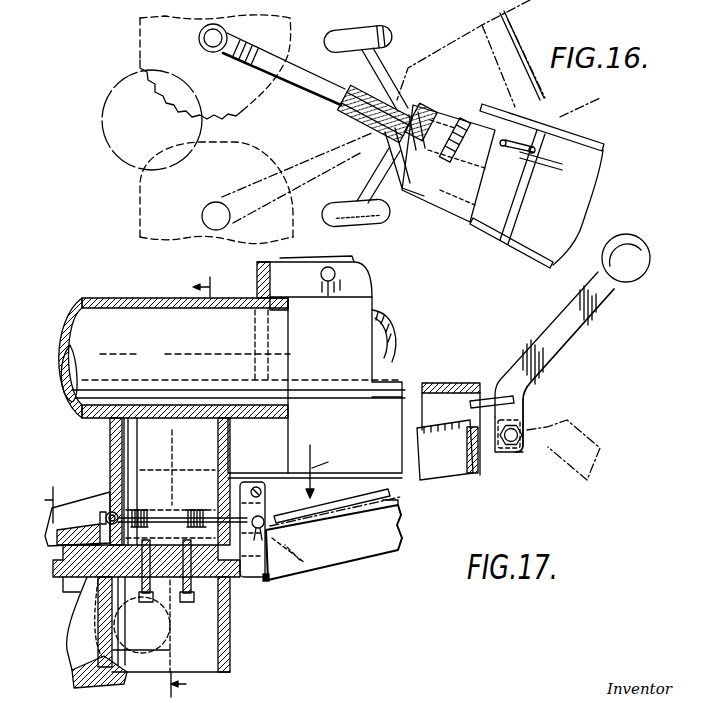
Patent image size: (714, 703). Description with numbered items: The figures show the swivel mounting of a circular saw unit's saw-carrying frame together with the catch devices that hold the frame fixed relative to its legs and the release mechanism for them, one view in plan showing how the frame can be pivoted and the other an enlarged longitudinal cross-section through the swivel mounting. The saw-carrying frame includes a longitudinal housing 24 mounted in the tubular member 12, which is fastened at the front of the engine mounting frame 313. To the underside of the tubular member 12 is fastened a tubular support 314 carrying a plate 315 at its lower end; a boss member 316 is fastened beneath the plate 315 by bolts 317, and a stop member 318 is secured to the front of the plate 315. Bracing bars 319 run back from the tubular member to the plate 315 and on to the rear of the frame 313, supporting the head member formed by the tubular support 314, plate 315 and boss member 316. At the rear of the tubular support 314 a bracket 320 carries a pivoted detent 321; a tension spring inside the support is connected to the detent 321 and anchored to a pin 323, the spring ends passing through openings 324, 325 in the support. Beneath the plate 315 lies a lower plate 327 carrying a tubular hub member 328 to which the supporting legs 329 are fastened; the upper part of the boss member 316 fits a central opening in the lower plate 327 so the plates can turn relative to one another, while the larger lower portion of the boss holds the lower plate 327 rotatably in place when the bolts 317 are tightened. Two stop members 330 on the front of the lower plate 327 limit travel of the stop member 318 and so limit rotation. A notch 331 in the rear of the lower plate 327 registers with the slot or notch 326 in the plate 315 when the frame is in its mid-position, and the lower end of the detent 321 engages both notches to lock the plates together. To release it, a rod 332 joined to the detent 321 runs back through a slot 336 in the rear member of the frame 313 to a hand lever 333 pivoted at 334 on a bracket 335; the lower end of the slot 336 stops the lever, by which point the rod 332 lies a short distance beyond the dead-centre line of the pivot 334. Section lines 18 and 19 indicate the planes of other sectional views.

In FIG. 16, the tubular member 12 is at (358, 97).
In FIG. 17, the tubular member 12 is at (102, 299).
In FIG. 17, the section line 18- 18 is at (202, 486).
In FIG. 17, the section line 19- 19 is at (190, 484).
In FIG. 16, the longitudinal housing 24 is at (288, 74).
In FIG. 17, the longitudinal housing 24 is at (188, 352).
In FIG. 16, the engine mounting frame 313 is at (447, 106).
In FIG. 17, the engine mounting frame 313 is at (432, 382).
In FIG. 17, the tubular support 314 is at (110, 432).
In FIG. 17, the plate 315 is at (86, 574).
In FIG. 17, the boss member 316 is at (206, 600).
In FIG. 17, the bolts 317 is at (152, 600).
In FIG. 17, the stop member 318 is at (110, 523).
In FIG. 16, the bracing bars 319 is at (457, 127).
In FIG. 17, the bracing bars 319 is at (450, 482).
In FIG. 17, the bracket 320 is at (233, 476).
In FIG. 17, the detent 321 is at (258, 515).
In FIG. 17, the pin 323 is at (107, 511).
In FIG. 17, the opening 324 is at (112, 509).
In FIG. 17, the opening 325 is at (214, 512).
In FIG. 17, the slot or notch 326 is at (298, 566).
In FIG. 17, the lower plate 327 is at (97, 590).
In FIG. 17, the tubular hub member 328 is at (113, 657).
In FIG. 16, the supporting legs 329 is at (372, 52).
In FIG. 17, the supporting legs 329 is at (124, 683).
In FIG. 17, the stop members 330 is at (93, 580).
In FIG. 17, the notch 331 is at (268, 581).
In FIG. 16, the rod 332 is at (524, 157).
In FIG. 17, the rod 332 is at (138, 510).
In FIG. 16, the hand lever 333 is at (535, 148).
In FIG. 17, the hand lever 333 is at (533, 344).
In FIG. 17, the pivot 334 is at (518, 452).
In FIG. 17, the bracket 335 is at (502, 455).
In FIG. 17, the slot 336 is at (466, 447).